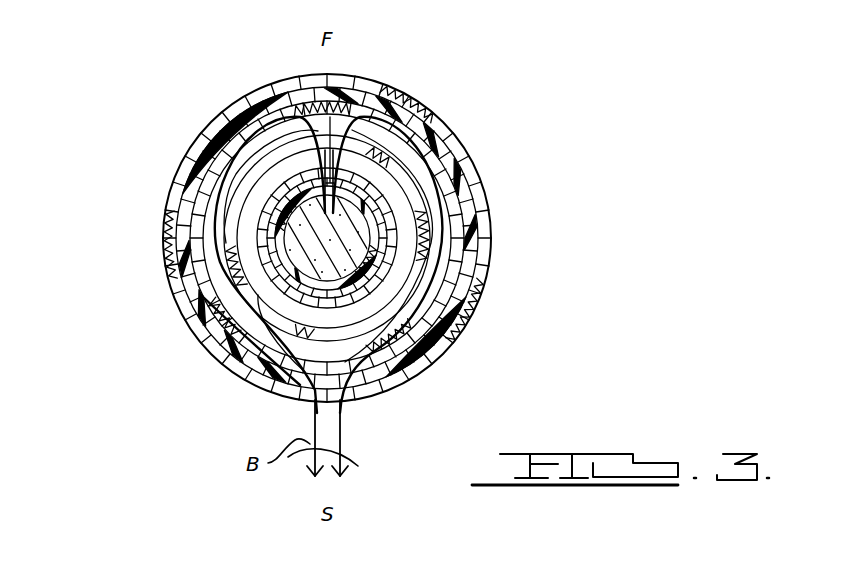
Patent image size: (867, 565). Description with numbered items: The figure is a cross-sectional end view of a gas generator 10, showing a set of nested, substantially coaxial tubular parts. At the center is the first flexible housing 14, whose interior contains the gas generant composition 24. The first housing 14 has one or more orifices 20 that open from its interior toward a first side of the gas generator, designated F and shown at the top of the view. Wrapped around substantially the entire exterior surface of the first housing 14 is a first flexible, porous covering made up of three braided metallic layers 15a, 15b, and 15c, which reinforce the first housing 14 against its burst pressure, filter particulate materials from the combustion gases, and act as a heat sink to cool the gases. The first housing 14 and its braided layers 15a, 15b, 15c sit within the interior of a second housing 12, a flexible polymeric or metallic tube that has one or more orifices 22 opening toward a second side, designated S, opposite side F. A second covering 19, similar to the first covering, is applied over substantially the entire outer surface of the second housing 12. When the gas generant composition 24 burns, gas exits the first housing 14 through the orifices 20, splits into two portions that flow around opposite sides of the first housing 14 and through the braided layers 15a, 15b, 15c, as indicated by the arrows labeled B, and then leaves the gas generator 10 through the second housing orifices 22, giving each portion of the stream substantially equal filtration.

The gas generator 10 is at (557, 158).
The second housing 12 is at (216, 122).
The first flexible housing 14 is at (280, 262).
The braided layer 15a is at (232, 340).
The braided layer 15b is at (460, 333).
The braided layer 15c is at (198, 222).
The second covering 19 is at (490, 229).
The first housing orifice 20 is at (345, 103).
The second housing orifice 22 is at (357, 390).
The gas generant composition 24 is at (405, 278).